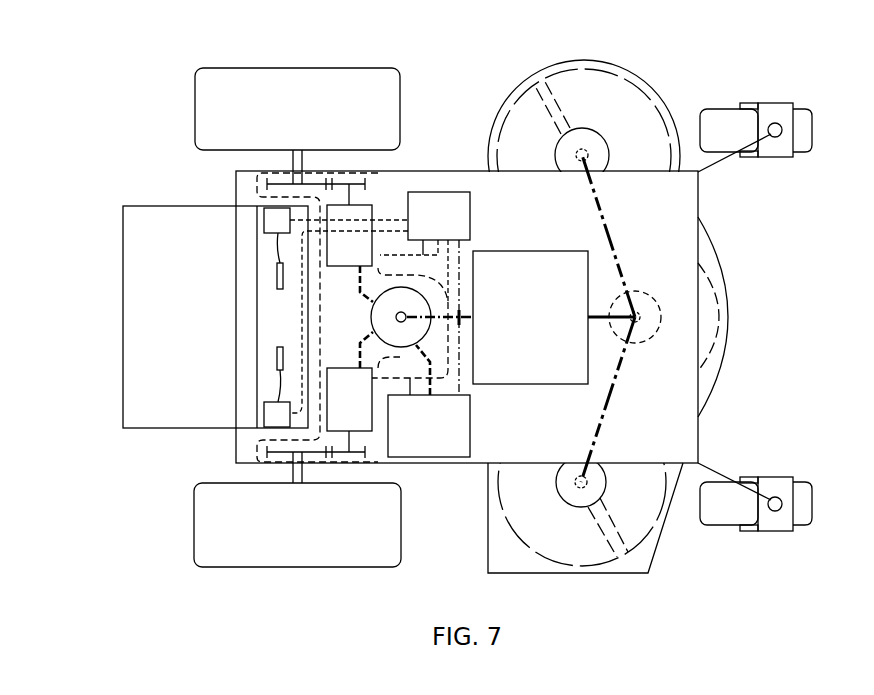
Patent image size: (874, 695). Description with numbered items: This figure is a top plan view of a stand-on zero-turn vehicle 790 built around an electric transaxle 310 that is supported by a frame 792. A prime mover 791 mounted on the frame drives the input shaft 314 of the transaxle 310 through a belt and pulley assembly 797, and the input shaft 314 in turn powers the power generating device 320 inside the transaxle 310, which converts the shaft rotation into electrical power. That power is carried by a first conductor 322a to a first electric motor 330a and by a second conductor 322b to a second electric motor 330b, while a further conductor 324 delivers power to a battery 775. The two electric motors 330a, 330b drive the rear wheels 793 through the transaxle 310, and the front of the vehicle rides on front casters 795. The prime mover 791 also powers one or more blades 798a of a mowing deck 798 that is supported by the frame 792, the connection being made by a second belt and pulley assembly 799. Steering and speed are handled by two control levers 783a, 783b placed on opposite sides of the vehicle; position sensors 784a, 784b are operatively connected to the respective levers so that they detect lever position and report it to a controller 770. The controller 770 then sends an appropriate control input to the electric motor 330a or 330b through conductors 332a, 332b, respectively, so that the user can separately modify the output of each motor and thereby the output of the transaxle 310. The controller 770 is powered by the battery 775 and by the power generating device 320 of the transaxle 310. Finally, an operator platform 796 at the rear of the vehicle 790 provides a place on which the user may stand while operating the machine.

The zero-turn vehicle 790 is at (74, 58).
The frame 792 is at (452, 171).
The rear wheels 793 is at (298, 68).
The front casters 795 is at (812, 130).
The operator platform 796 is at (206, 327).
The belt and pulley assembly 797 is at (480, 319).
The mowing deck 798 is at (583, 60).
The blade 798a is at (565, 112).
The belt and pulley assembly 799 is at (600, 317).
The prime mover 791 is at (546, 366).
The transaxle 310 is at (431, 270).
The power generating device 320 is at (415, 309).
The input shaft 314 is at (397, 318).
The first conductor 322a is at (357, 278).
The second conductor 322b is at (357, 357).
The conductor 324 is at (432, 383).
The first electric motor 330a is at (369, 252).
The second electric motor 330b is at (369, 411).
The conductor 332a is at (433, 235).
The conductor 332b is at (419, 399).
The controller 770 is at (455, 214).
The battery 775 is at (445, 451).
The control lever 783a is at (277, 274).
The control lever 783b is at (277, 357).
The position sensor 784a is at (264, 221).
The position sensor 784b is at (264, 415).